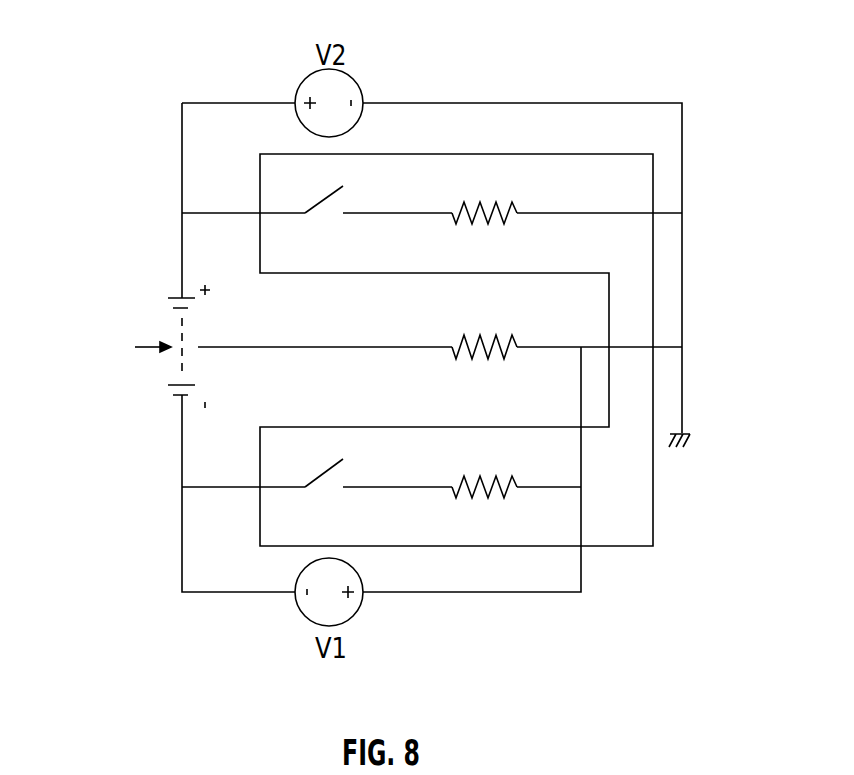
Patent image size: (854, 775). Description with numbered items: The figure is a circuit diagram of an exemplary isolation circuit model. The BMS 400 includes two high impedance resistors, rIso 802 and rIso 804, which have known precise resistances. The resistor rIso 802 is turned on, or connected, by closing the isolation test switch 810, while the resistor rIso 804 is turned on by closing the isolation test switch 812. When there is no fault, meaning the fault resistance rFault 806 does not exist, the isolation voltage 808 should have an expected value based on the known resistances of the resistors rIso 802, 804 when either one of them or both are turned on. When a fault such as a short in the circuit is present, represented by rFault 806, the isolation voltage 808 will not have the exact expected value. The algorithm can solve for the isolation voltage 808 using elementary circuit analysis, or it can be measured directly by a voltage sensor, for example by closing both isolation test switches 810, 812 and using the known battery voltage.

The BMS 400 is at (645, 198).
The rIso 802 is at (488, 201).
The rIso 804 is at (487, 473).
The rFault 806 is at (487, 335).
The vIso 808 is at (123, 366).
The isolation test switch 810 is at (317, 205).
The isolation test switch 812 is at (317, 478).